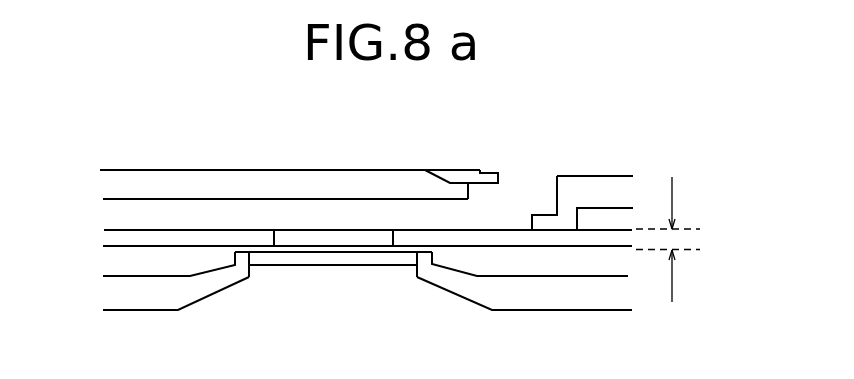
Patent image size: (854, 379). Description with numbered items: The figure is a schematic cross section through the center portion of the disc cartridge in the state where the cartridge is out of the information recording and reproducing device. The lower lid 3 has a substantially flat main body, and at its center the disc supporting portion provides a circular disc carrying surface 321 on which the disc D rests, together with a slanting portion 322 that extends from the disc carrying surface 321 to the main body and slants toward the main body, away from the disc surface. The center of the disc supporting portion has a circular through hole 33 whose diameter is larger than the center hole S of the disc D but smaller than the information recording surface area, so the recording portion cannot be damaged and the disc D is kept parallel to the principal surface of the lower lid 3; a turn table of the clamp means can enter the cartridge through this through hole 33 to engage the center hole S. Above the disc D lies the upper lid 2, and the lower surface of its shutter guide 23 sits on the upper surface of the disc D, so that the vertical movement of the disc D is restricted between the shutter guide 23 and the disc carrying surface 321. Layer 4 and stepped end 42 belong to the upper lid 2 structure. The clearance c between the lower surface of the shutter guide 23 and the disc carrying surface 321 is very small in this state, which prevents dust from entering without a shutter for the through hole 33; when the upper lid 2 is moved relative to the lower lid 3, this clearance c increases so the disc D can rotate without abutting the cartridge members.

The upper lid 2 is at (609, 180).
The lower lid 3 is at (590, 310).
The upper layer 4 is at (233, 168).
The shutter guide 23 is at (548, 215).
The through hole 33 is at (320, 279).
The stepped end portion 42 is at (453, 171).
The disc carrying surface 321 is at (398, 260).
The slanting portion 322 is at (225, 280).
The disc D is at (172, 229).
The center hole S is at (337, 238).
The clearance c is at (668, 241).